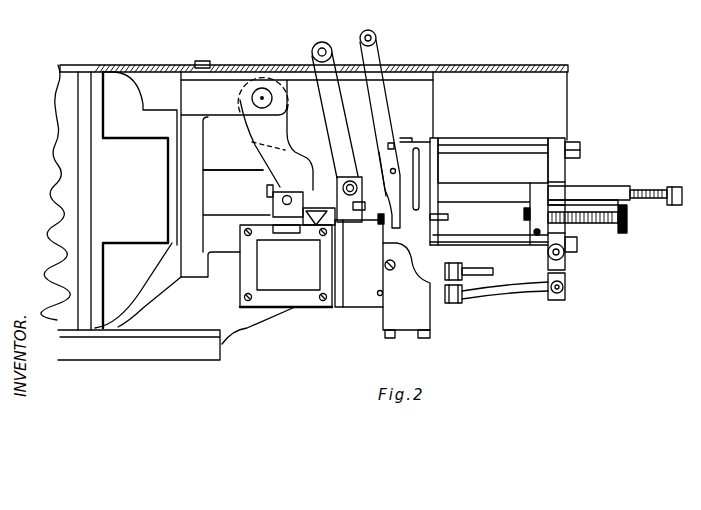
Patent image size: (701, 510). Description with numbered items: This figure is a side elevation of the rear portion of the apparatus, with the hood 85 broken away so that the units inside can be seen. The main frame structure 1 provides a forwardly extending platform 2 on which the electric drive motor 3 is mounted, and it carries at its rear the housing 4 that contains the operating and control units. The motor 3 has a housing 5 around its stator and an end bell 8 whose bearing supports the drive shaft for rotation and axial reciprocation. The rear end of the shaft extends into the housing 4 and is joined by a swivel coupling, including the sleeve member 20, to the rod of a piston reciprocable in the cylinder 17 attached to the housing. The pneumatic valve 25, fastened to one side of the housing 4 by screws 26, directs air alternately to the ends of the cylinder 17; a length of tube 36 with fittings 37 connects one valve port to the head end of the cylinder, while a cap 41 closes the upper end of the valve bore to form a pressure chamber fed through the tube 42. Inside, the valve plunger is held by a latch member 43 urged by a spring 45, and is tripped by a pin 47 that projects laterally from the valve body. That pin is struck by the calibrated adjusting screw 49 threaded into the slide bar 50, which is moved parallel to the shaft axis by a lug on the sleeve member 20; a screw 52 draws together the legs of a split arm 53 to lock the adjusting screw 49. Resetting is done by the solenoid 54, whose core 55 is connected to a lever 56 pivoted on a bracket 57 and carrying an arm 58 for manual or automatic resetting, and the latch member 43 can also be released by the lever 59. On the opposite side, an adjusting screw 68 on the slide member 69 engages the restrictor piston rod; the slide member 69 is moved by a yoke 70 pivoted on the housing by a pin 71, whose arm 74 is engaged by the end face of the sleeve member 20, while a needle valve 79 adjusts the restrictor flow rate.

The main frame structure 1 is at (248, 330).
The platform 2 is at (97, 352).
The electric drive motor 3 is at (72, 60).
The housing 4 is at (436, 113).
The motor housing 5 is at (65, 96).
The end bell 8 is at (122, 85).
The cylinder 17 is at (491, 146).
The sleeve member 20 is at (369, 162).
The pneumatic valve 25 is at (392, 318).
The screws 26 is at (385, 265).
The tube 36 is at (508, 299).
The fittings 37 is at (457, 305).
The cap 41 is at (413, 140).
The tube 42 is at (428, 284).
The latch member 43 is at (393, 221).
The spring 45 is at (347, 229).
The pin 47 is at (446, 218).
The adjusting screw 49 is at (593, 224).
The slide bar 50 is at (615, 181).
The screw 52 is at (535, 232).
The split arm 53 is at (532, 204).
The solenoid 54 is at (297, 281).
The core 55 is at (273, 214).
The lever 56 is at (313, 190).
The bracket 57 is at (358, 188).
The arm 58 is at (310, 58).
The lever 59 is at (378, 57).
The adjusting screw 68 is at (647, 187).
The slide member 69 is at (588, 184).
The yoke 70 is at (260, 138).
The pin 71 is at (252, 98).
The arm 74 is at (280, 168).
The needle valve 79 is at (207, 62).
The hood 85 is at (523, 68).